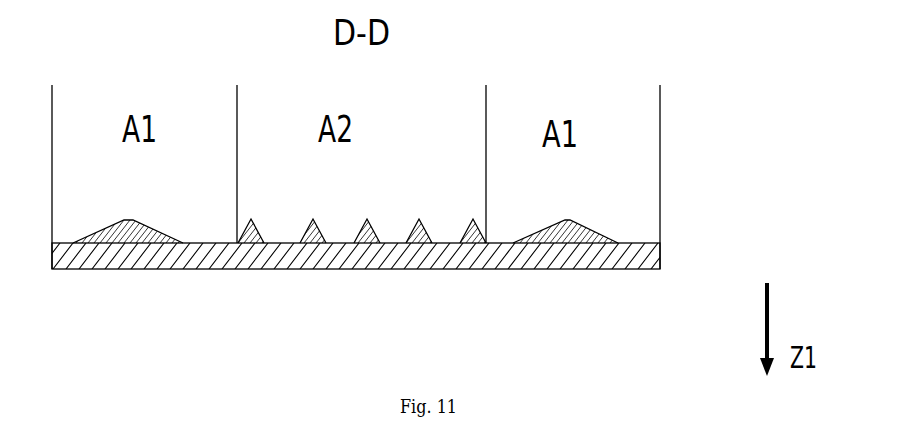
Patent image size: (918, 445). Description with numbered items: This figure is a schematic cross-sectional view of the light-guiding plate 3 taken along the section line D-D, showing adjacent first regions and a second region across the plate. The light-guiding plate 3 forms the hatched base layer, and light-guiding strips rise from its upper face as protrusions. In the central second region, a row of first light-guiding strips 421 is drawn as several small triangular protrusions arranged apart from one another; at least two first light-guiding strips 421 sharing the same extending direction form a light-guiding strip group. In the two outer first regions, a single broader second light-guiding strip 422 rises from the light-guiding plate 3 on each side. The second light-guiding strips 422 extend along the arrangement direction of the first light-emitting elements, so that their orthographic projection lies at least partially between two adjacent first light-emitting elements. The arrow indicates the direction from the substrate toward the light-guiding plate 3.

The light-guiding plate 3 is at (645, 245).
The first light-guiding strips 421 is at (258, 240).
The second light-guiding strips 422 is at (577, 223).